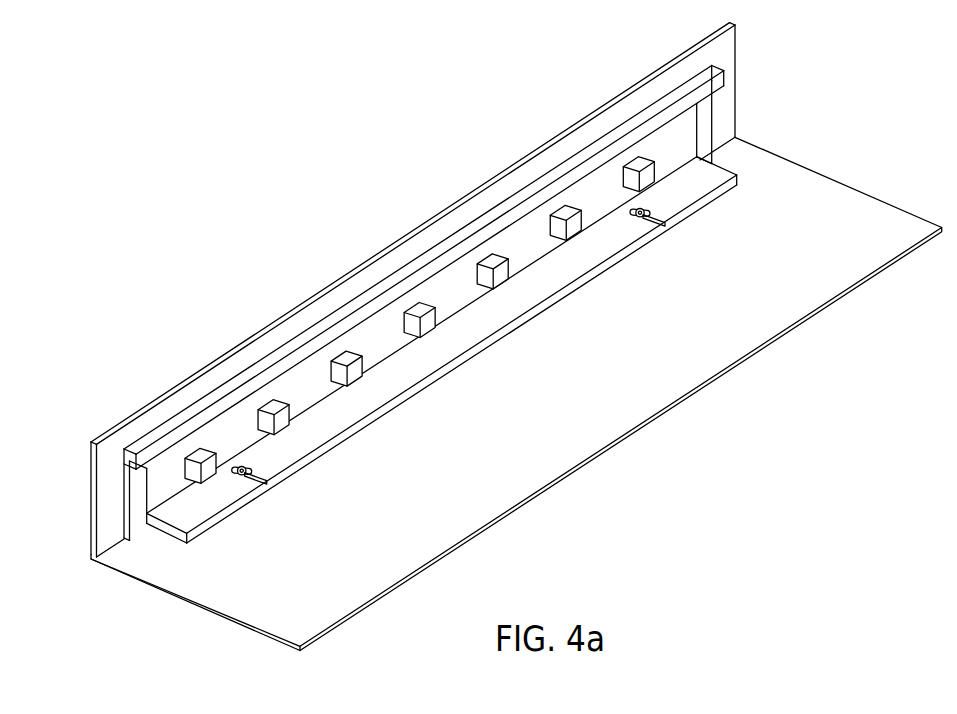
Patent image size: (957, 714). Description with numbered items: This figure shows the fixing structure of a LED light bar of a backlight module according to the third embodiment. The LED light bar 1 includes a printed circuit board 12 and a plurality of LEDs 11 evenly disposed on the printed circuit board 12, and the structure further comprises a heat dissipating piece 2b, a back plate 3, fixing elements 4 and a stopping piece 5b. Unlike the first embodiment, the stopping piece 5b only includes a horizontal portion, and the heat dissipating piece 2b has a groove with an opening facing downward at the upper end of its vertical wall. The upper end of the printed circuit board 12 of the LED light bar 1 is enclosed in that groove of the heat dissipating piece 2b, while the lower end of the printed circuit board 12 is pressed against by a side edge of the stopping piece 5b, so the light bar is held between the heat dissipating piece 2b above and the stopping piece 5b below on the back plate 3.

The LED light bar 1 is at (132, 498).
The heat dissipating piece 2b is at (143, 443).
The back plate 3 is at (84, 459).
The fixing elements 4 is at (237, 485).
The stopping piece 5b is at (160, 528).
The LEDs 11 is at (637, 166).
The printed circuit board 12 is at (675, 140).